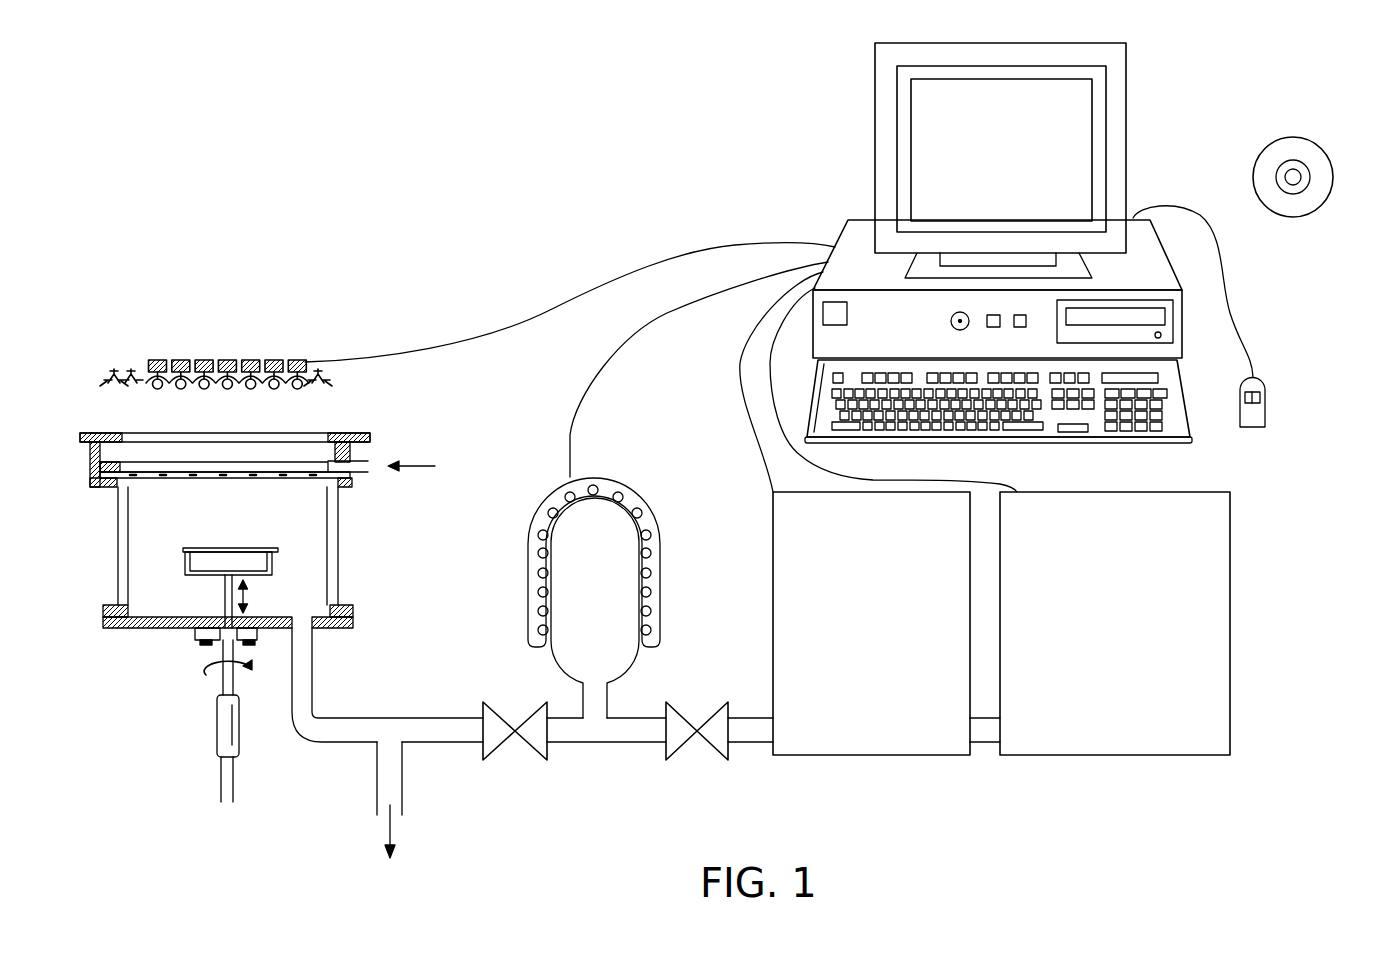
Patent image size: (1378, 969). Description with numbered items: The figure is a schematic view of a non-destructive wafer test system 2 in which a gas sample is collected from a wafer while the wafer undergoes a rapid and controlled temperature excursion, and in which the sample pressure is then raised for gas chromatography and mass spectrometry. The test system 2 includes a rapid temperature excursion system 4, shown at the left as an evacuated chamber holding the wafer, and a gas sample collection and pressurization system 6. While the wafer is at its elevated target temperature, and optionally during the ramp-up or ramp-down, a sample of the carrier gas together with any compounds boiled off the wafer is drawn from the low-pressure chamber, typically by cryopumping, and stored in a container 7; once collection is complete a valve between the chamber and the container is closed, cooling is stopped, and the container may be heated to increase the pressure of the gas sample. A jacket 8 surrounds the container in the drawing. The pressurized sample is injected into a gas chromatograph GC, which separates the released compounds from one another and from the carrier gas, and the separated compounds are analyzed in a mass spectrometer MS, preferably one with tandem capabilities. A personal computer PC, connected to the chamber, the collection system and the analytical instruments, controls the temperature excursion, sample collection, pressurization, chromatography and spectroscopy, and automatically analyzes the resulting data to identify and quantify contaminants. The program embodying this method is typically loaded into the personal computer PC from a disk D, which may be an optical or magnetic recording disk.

The non-destructive wafer test system 2 is at (425, 122).
The rapid temperature excursion system 4 is at (340, 518).
The gas sample collection and pressurization system 6 is at (595, 477).
The container 7 is at (627, 653).
The heating jacket 8 is at (528, 592).
The personal computer PC is at (1082, 102).
The disk D is at (1293, 137).
The gas chromatograph GC is at (871, 623).
The mass spectrometer MS is at (1115, 623).